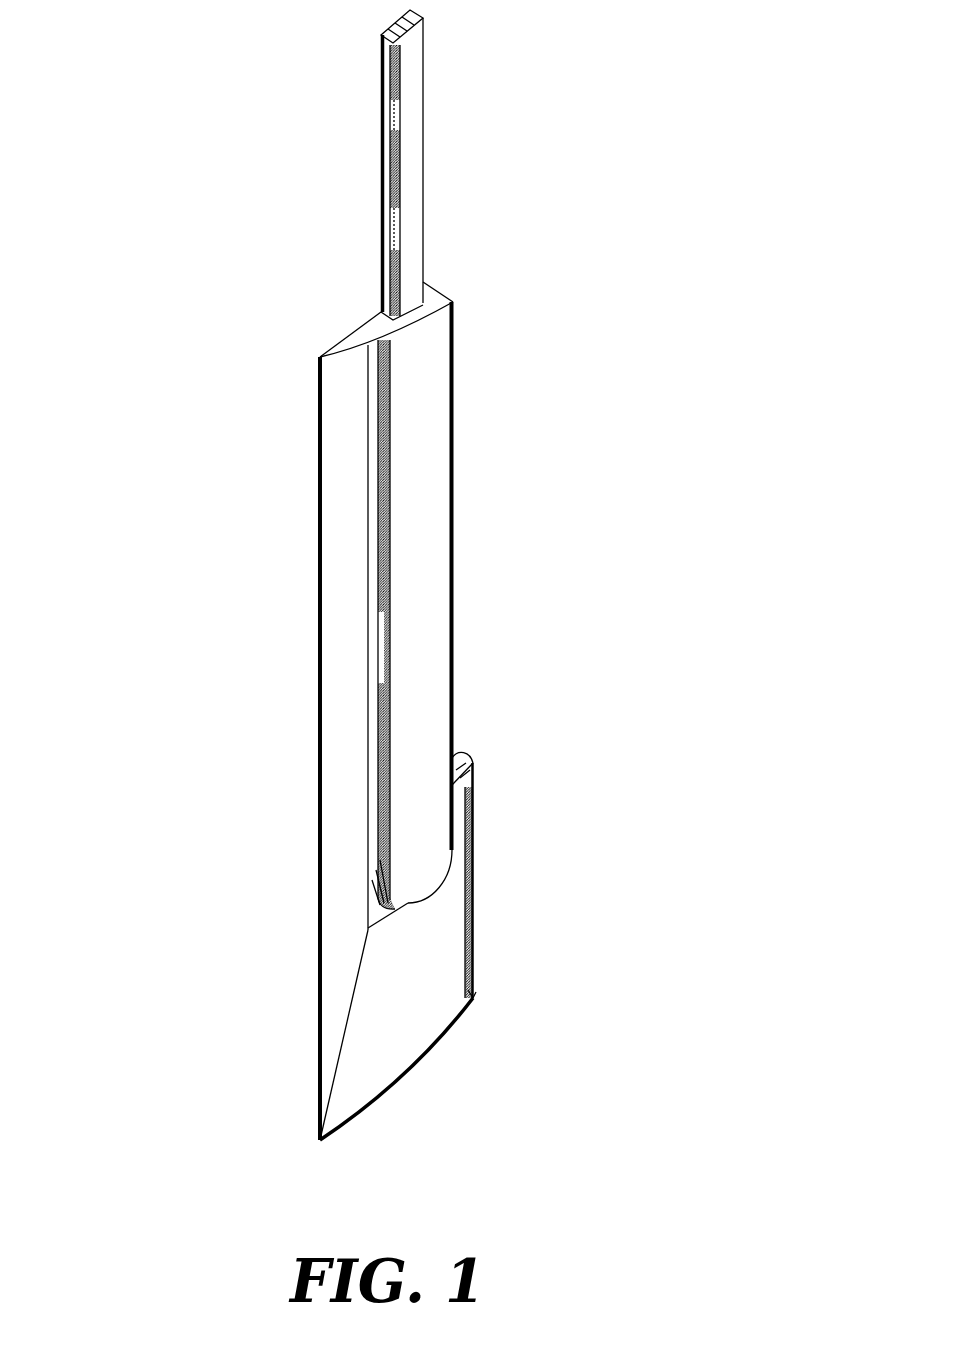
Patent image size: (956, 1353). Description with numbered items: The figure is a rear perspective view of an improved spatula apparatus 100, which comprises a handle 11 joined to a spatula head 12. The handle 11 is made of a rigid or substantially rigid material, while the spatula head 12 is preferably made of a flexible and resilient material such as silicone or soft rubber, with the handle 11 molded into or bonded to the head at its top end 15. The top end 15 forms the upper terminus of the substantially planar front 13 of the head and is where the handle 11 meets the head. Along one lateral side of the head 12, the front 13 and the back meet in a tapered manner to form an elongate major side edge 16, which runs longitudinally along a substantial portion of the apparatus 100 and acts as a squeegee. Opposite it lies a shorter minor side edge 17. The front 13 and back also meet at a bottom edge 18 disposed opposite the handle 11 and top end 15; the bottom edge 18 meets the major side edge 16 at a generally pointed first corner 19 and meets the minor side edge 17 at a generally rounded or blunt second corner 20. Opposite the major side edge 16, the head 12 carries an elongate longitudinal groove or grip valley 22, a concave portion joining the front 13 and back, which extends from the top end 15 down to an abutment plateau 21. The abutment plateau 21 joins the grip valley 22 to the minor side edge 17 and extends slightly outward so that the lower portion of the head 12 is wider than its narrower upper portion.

The spatula apparatus 100 is at (128, 104).
The handle 11 is at (410, 168).
The spatula head 12 is at (606, 534).
The front 13 is at (427, 685).
The top end 15 is at (365, 333).
The elongate major side edge 16 is at (318, 688).
The minor side edge 17 is at (478, 885).
The bottom edge 18 is at (410, 1078).
The first corner 19 is at (320, 1140).
The second corner 20 is at (475, 998).
The abutment plateau 21 is at (475, 762).
The grip valley 22 is at (452, 556).